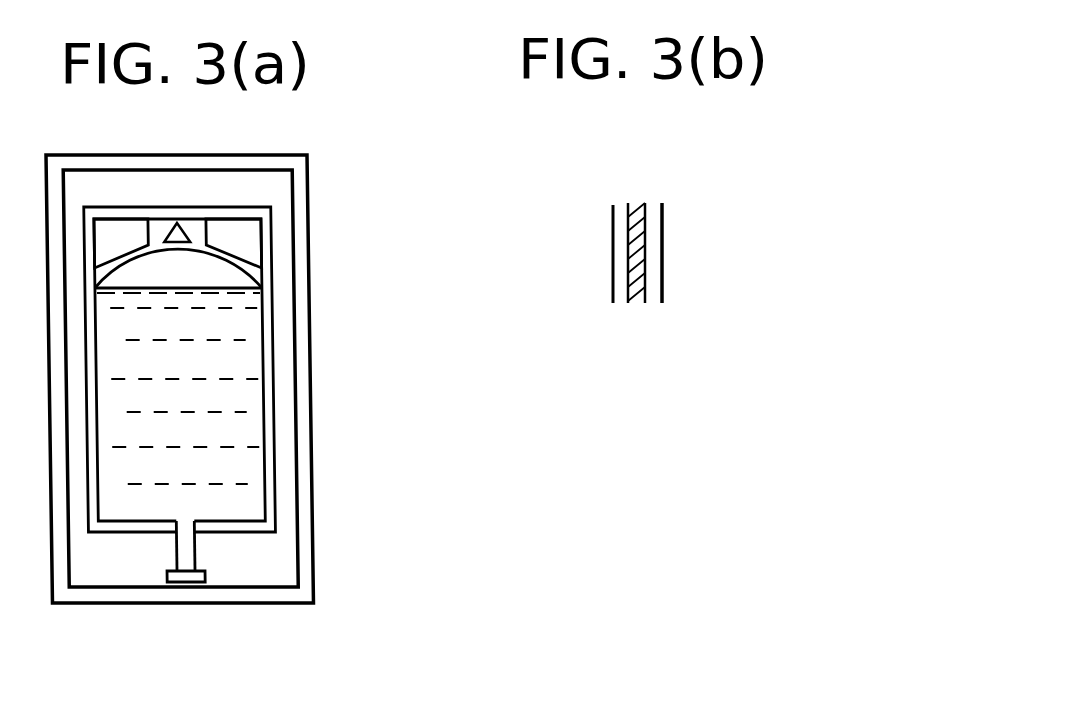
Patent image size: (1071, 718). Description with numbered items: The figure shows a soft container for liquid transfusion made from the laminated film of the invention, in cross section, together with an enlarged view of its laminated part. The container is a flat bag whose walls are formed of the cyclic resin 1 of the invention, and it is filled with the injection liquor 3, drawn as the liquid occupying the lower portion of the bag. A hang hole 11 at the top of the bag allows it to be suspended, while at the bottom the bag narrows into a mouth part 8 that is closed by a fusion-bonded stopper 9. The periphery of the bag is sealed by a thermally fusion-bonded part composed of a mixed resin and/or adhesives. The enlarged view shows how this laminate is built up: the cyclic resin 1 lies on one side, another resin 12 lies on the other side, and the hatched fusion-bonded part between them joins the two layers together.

The cyclic resin 1 is at (622, 282).
The injection liquor 3 is at (228, 404).
The mouth part 8 is at (178, 550).
The fusion-bonded stopper 9 is at (180, 582).
The hang hole 11 is at (178, 232).
The other resin 12 is at (652, 265).